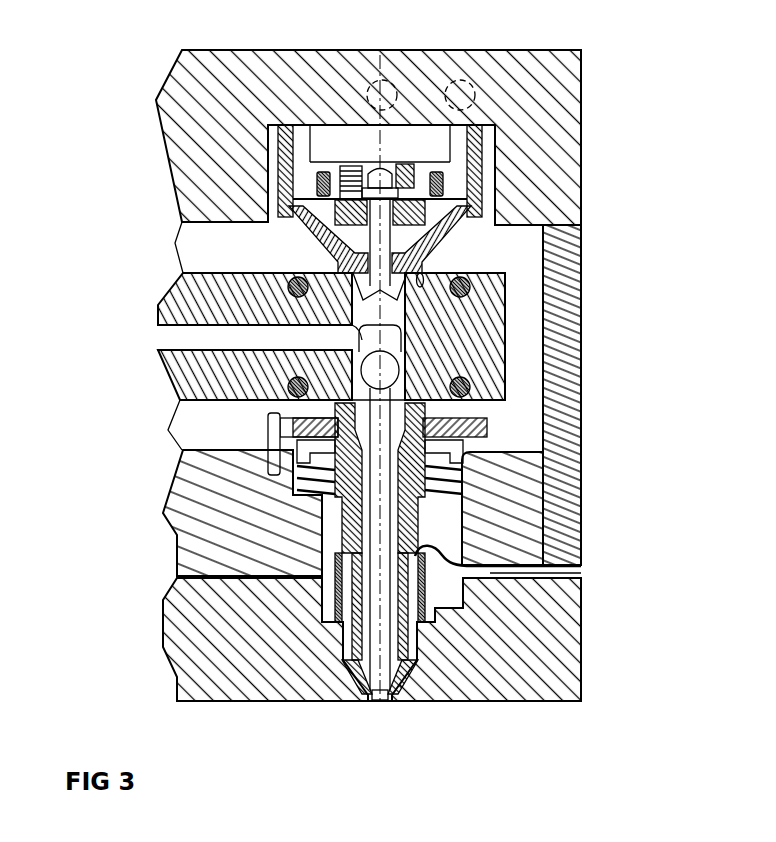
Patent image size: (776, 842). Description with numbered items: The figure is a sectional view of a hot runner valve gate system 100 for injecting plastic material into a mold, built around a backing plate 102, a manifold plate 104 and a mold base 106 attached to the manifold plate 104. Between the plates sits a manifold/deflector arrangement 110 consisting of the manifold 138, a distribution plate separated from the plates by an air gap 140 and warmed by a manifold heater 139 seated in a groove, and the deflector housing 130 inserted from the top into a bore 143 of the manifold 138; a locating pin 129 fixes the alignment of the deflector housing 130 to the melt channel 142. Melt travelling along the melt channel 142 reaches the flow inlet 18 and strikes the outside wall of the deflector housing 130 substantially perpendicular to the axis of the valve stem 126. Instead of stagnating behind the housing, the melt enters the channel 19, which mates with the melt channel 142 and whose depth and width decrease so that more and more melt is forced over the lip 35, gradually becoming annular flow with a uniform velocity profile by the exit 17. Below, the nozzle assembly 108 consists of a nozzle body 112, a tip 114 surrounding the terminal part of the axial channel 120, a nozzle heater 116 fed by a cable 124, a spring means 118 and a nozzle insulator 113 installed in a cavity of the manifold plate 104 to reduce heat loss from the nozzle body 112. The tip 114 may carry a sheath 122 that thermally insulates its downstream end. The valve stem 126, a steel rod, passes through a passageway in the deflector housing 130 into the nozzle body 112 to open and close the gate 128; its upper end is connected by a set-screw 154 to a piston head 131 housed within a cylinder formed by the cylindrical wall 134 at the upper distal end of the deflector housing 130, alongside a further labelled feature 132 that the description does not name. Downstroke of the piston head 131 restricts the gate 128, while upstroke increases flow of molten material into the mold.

The hot runner valve gate system 100 is at (156, 665).
The backing plate 102 is at (562, 78).
The manifold plate 104 is at (217, 548).
The mold base 106 is at (540, 690).
The nozzle assembly 108 is at (232, 431).
The manifold/deflector arrangement 110 is at (152, 395).
The nozzle body 112 is at (458, 488).
The nozzle insulator 113 is at (463, 515).
The tip 114 is at (400, 672).
The nozzle heater 116 is at (418, 605).
The spring means 118 is at (560, 565).
The axial channel 120 is at (343, 648).
The sheath 122 is at (350, 683).
The cable 124 is at (585, 575).
The valve stem 126 is at (440, 190).
The gate 128 is at (396, 725).
The locating pin 129 is at (430, 240).
The deflector housing 130 is at (403, 348).
The piston head 131 is at (422, 135).
The valve stem 132 is at (398, 178).
The cylindrical wall 134 is at (262, 110).
The manifold 138 is at (485, 320).
The manifold heater 139 is at (562, 300).
The air gap 140 is at (205, 240).
The melt channel 142 is at (175, 340).
The bore 143 is at (500, 390).
The set-screw 154 is at (352, 232).
The exit 17 is at (405, 377).
The flow inlet 18 is at (357, 340).
The channel 19 is at (460, 352).
The lip 35 is at (412, 362).